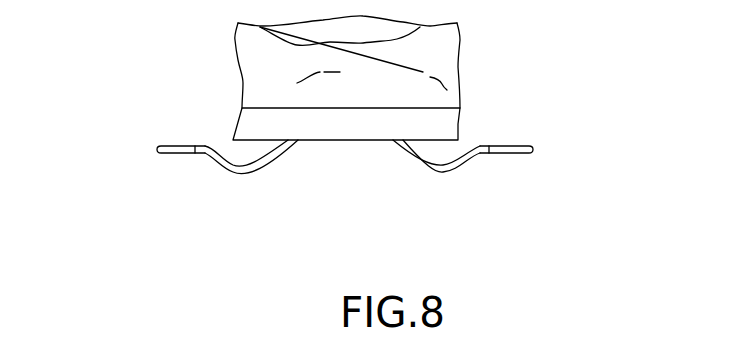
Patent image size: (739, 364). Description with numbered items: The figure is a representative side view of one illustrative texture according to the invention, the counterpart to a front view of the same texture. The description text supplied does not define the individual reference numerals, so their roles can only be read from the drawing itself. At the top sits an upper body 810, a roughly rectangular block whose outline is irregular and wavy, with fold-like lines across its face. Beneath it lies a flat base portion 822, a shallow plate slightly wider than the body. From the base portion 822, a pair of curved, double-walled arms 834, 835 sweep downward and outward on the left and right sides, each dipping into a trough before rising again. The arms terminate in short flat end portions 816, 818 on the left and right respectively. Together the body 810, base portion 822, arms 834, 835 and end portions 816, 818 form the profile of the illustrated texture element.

The cushion body 810 is at (452, 38).
The base plate 822 is at (238, 125).
The left flange strip 816 is at (157, 148).
The right flange strip 818 is at (533, 150).
The left curved arm 834 is at (255, 171).
The right curved arm 835 is at (453, 173).